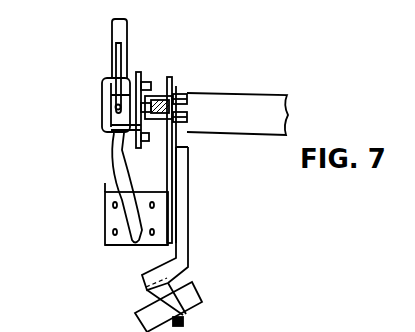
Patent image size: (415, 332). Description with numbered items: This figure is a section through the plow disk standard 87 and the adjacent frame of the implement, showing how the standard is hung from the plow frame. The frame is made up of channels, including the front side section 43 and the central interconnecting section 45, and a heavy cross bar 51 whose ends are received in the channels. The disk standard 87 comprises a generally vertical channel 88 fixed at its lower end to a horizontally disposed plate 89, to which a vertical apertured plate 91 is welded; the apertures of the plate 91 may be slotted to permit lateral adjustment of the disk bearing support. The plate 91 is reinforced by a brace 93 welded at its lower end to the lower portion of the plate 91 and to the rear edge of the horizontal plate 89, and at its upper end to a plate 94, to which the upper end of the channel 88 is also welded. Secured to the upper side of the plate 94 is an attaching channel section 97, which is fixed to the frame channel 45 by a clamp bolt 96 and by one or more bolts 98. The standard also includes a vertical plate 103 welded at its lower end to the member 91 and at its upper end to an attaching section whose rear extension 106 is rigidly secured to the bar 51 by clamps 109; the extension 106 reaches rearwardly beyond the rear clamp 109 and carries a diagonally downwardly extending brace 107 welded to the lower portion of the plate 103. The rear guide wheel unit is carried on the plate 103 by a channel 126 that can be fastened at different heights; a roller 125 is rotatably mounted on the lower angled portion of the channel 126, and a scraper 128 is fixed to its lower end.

The front side section 43 is at (236, 93).
The central interconnecting section 45 is at (118, 116).
The cross bar 51 is at (158, 100).
The disk standard 87 is at (106, 243).
The channel 88 is at (127, 143).
The horizontal plate 89 is at (137, 190).
The vertical apertured plate 91 is at (112, 219).
The brace 93 is at (113, 160).
The plate 94 is at (116, 141).
The clamp bolt 96 is at (103, 93).
The attaching channel section 97 is at (128, 98).
The bolt 98 is at (116, 107).
The vertical plate 103 is at (176, 157).
The rear attaching plate extension 106 is at (172, 92).
The diagonal brace 107 is at (163, 184).
The clamp 109 is at (176, 93).
The roller 125 is at (192, 300).
The channel 126 is at (186, 200).
The scraper 128 is at (168, 287).